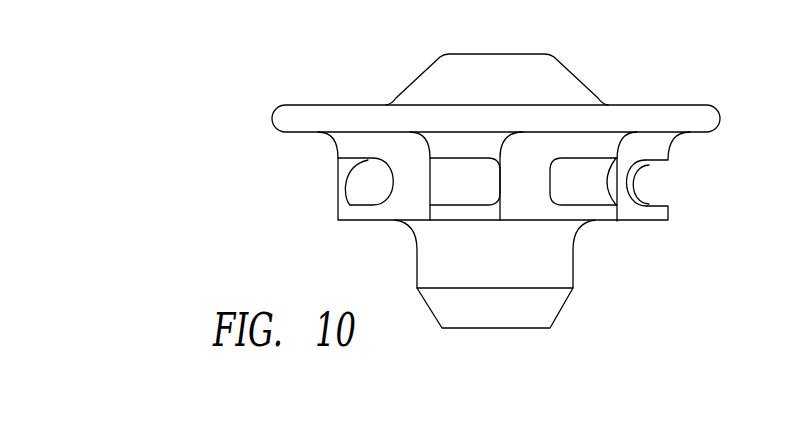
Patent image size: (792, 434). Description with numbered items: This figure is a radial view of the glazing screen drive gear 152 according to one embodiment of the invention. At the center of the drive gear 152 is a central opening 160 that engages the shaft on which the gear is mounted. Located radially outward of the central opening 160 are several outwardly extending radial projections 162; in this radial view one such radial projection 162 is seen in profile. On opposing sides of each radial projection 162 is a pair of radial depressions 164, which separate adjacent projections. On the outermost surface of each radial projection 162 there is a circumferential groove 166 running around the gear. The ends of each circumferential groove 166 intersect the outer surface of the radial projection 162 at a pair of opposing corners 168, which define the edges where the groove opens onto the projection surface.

The drive gear 152 is at (236, 118).
The central opening 160 is at (508, 340).
The radial projection 162 is at (647, 222).
The radial depression 164 is at (517, 183).
The circumferential groove 166 is at (634, 187).
The opposing corner 168 is at (500, 185).